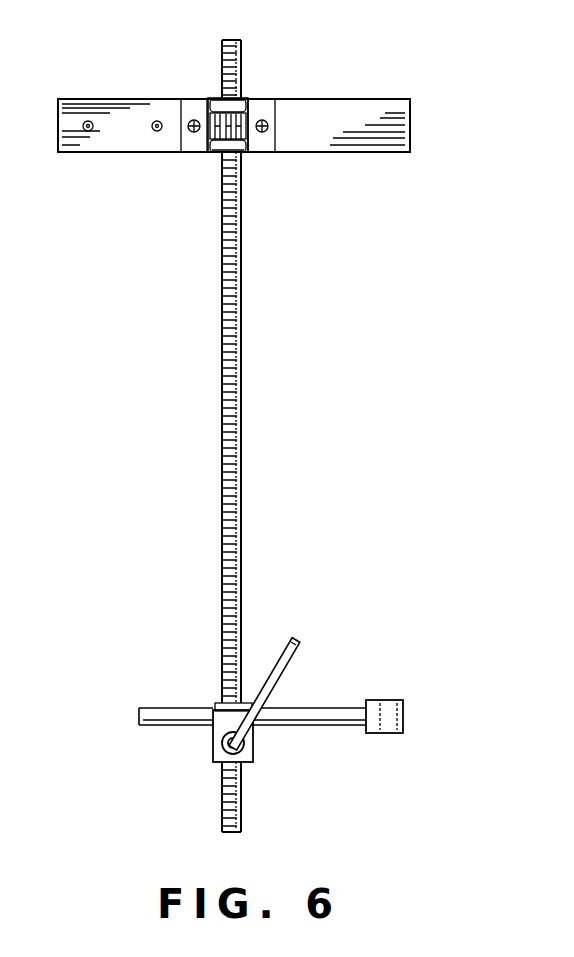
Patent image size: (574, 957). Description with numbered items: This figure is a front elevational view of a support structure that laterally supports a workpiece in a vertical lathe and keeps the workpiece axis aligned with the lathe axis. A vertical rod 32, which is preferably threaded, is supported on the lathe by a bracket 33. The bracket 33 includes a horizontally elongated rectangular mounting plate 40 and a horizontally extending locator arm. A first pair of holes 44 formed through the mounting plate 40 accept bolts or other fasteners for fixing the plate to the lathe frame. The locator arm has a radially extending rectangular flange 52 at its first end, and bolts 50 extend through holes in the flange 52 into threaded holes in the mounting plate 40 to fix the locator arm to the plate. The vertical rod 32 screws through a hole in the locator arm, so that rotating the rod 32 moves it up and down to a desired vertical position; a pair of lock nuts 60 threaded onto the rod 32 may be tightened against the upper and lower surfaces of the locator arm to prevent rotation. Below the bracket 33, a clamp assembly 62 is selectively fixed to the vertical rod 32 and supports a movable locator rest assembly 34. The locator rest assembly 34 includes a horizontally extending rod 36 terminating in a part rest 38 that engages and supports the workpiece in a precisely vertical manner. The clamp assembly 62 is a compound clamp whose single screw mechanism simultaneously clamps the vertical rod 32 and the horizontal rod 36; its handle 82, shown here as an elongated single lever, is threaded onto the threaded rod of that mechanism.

The vertical rod 32 is at (240, 367).
The bracket 33 is at (227, 110).
The locator rest assembly 34 is at (325, 723).
The horizontal rod 36 is at (167, 722).
The part rest 38 is at (401, 700).
The mounting plate 40 is at (390, 112).
The first pair of holes 44 is at (155, 131).
The bolts 50 is at (194, 133).
The rectangular flange 52 is at (190, 105).
The lock nuts 60 is at (233, 116).
The clamp assembly 62 is at (213, 710).
The handle 82 is at (298, 648).